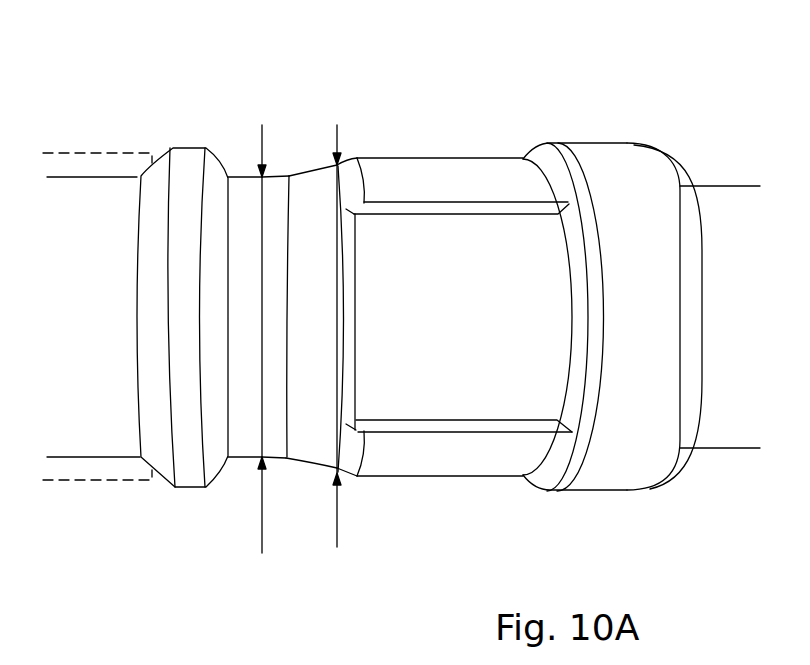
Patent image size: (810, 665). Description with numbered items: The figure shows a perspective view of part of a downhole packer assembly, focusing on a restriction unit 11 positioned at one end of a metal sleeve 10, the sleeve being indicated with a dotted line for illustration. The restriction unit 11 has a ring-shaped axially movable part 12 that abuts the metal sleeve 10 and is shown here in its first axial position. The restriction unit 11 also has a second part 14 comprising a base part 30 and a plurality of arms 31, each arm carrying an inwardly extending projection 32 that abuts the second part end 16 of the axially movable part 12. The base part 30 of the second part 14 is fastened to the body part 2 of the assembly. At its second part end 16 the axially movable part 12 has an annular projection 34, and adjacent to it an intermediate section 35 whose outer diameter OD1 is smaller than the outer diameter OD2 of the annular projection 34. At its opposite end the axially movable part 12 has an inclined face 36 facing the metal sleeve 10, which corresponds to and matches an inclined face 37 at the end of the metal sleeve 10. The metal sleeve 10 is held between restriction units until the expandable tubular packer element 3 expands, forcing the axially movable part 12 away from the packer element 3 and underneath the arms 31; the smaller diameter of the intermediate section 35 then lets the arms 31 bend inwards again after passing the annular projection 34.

The body part 2 is at (717, 203).
The expandable tubular packer element 3 is at (65, 207).
The metal sleeve 10 is at (97, 153).
The restriction unit 11 is at (252, 185).
The axially movable part 12 is at (305, 190).
The second part 14 is at (427, 173).
The second part end 16 is at (320, 412).
The base part 30 is at (622, 458).
The arms 31 is at (507, 453).
The inwardly extending projection 32 is at (347, 423).
The annular projection 34 is at (330, 463).
The intermediate section 35 is at (236, 187).
The inclined face 36 is at (163, 150).
The inclined face 37 is at (163, 480).
The outer diameter OD1 is at (262, 542).
The second outer diameter OD2 is at (337, 523).